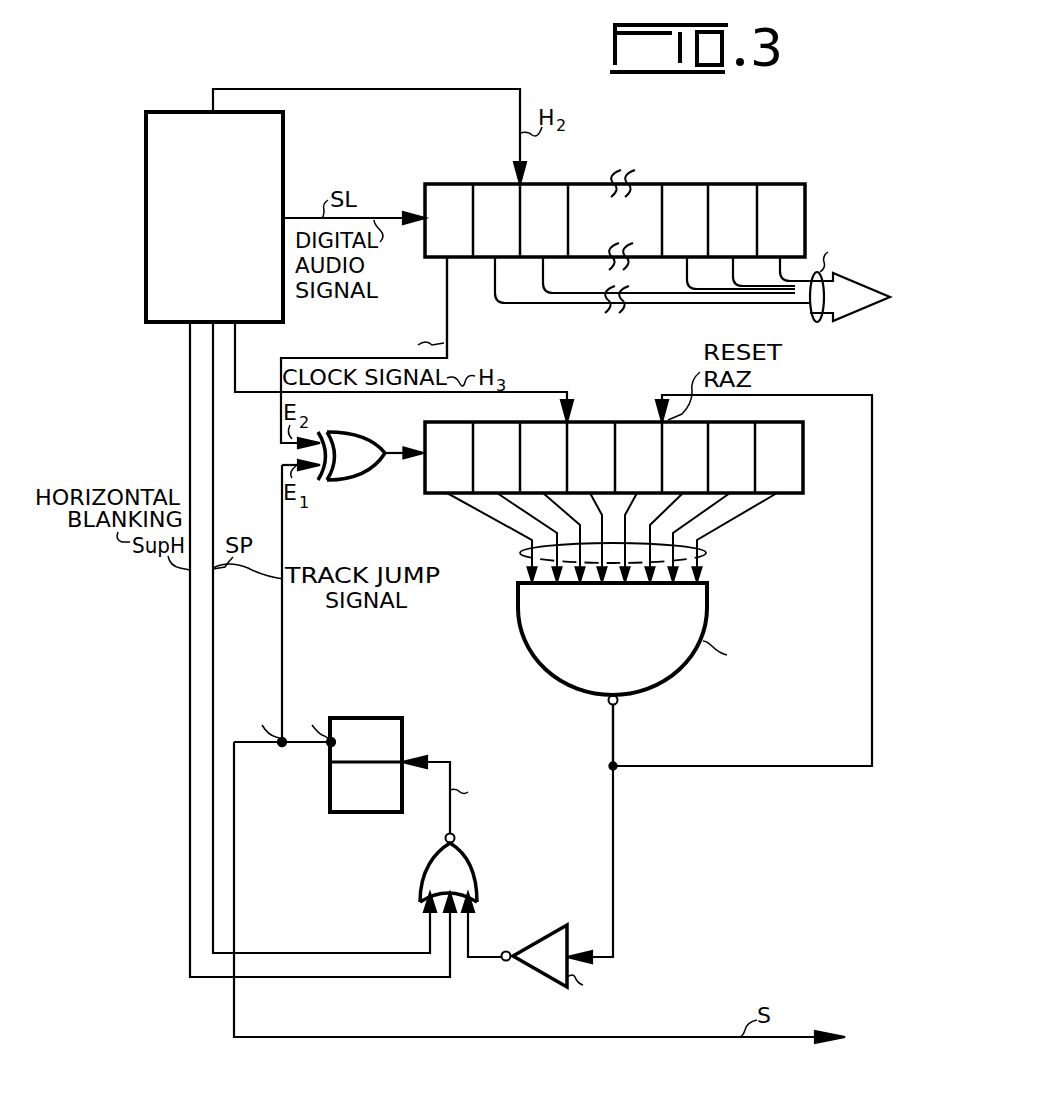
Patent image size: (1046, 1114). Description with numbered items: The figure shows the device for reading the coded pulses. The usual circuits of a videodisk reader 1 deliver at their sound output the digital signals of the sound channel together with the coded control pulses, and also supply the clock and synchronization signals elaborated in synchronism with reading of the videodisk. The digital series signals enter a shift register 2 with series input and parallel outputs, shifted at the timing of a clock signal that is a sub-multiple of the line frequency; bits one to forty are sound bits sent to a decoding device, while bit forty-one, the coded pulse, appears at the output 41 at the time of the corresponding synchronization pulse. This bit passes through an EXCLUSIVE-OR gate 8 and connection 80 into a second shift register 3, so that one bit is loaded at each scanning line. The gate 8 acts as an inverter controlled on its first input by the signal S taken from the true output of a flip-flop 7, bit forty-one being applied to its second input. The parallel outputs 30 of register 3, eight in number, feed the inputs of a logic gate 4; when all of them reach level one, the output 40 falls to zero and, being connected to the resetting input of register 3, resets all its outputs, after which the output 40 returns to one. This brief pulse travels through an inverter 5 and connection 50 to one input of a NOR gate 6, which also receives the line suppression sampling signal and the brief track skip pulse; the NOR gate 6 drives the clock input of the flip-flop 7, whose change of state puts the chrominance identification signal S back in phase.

The circuits of a videodisk reader 1 is at (283, 158).
The shift register 2 is at (648, 184).
The second shift register 3 is at (590, 420).
The logic gate 4 is at (691, 676).
The inverter 5 is at (591, 949).
The NOR gate 6 is at (518, 876).
The flip-flop 7 is at (368, 718).
The EXCLUSIVE-OR gate 8 is at (384, 475).
The outputs of shift register 3 30 is at (706, 553).
The output of gate 4 40 is at (613, 732).
The output 41 of shift register 2 41 is at (447, 328).
The connection 50 is at (506, 960).
The connection 80 is at (396, 457).